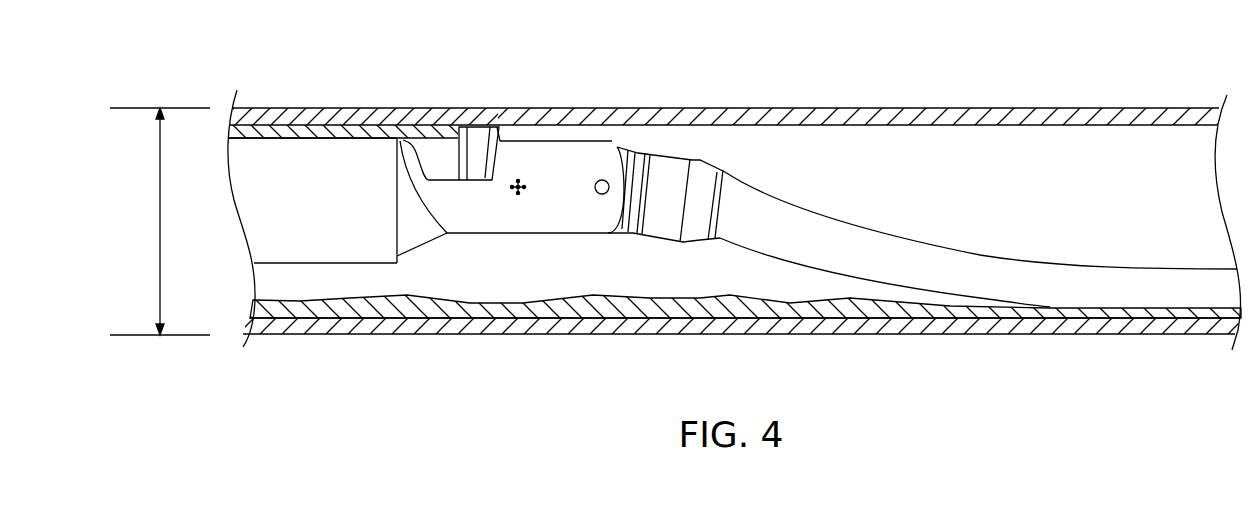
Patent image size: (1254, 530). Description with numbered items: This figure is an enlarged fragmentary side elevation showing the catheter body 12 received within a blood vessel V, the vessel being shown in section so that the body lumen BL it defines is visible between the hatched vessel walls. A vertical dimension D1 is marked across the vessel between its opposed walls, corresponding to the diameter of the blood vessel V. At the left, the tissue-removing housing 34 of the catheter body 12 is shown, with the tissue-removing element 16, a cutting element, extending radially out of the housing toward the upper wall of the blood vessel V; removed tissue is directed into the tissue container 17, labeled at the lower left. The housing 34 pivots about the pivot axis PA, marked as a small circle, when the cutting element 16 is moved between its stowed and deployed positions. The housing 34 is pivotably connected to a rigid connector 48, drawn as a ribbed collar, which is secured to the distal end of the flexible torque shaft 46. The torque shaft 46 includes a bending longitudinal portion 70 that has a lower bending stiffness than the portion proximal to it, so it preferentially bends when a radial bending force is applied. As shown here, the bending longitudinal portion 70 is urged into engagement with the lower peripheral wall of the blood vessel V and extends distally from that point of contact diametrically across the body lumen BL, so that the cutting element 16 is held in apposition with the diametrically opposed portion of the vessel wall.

The catheter body 12 is at (1154, 158).
The blood vessel V is at (893, 120).
The tissue container 17 is at (290, 265).
The body lumen BL is at (302, 292).
The vessel diameter D1 is at (158, 228).
The tissue-removing housing 34 is at (565, 213).
The tissue-removing element 16 is at (490, 126).
The pivot axis PA is at (603, 179).
The rigid connector 48 is at (678, 155).
The flexible torque shaft 46 is at (1152, 260).
The bending longitudinal portion 70 is at (950, 273).